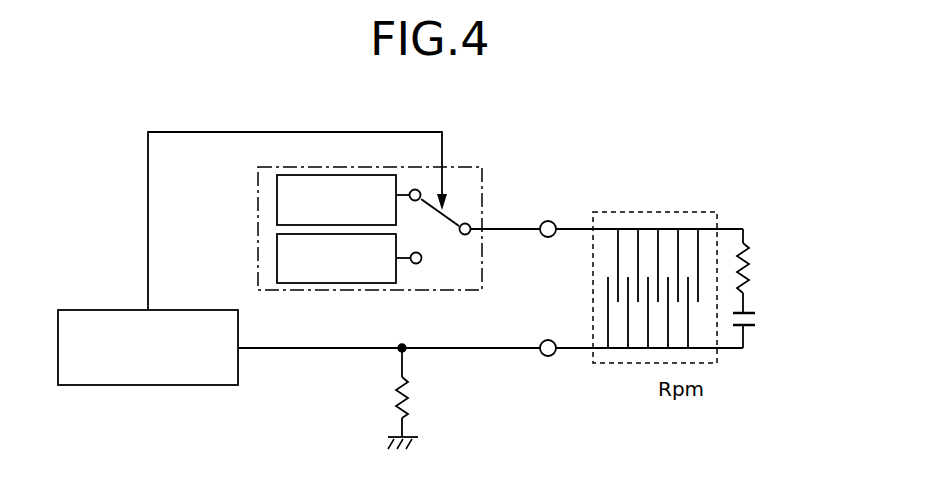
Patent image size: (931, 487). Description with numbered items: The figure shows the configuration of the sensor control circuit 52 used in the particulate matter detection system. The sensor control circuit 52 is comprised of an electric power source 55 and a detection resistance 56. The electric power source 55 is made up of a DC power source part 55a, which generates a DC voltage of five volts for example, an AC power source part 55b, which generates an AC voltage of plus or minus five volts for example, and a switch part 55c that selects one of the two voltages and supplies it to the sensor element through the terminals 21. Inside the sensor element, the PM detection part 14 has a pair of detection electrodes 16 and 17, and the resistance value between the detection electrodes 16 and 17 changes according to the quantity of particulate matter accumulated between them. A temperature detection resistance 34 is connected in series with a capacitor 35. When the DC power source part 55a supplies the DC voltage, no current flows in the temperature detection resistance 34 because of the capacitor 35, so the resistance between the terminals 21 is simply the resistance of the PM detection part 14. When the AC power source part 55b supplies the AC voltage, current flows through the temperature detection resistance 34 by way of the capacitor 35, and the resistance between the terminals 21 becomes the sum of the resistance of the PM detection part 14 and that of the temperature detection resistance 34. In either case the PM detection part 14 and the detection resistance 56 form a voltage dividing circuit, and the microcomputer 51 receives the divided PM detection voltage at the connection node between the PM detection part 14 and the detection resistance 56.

The PM detection part 14 is at (695, 212).
The detection electrode 16 is at (628, 228).
The detection electrode 17 is at (621, 350).
The terminals 21 is at (552, 221).
The temperature detection resistance 34 is at (746, 268).
The capacitor 35 is at (750, 330).
The microcomputer 51 is at (108, 309).
The sensor control circuit 52 is at (326, 362).
The electric power source 55 is at (364, 203).
The DC power source part 55a is at (277, 202).
The AC power source part 55b is at (277, 243).
The switch part 55c is at (453, 220).
The detection resistance 56 is at (410, 386).